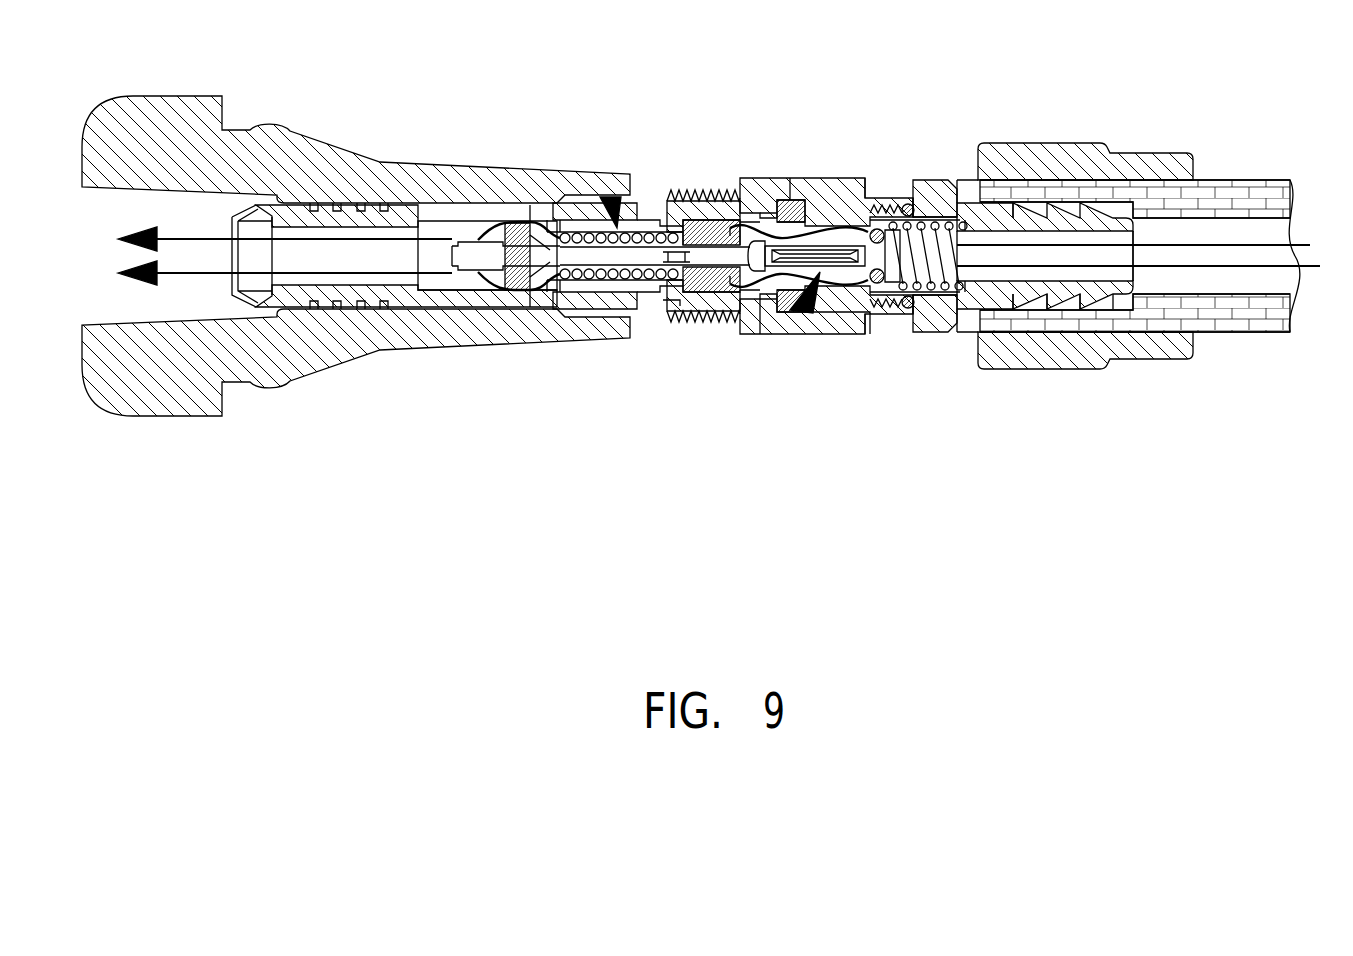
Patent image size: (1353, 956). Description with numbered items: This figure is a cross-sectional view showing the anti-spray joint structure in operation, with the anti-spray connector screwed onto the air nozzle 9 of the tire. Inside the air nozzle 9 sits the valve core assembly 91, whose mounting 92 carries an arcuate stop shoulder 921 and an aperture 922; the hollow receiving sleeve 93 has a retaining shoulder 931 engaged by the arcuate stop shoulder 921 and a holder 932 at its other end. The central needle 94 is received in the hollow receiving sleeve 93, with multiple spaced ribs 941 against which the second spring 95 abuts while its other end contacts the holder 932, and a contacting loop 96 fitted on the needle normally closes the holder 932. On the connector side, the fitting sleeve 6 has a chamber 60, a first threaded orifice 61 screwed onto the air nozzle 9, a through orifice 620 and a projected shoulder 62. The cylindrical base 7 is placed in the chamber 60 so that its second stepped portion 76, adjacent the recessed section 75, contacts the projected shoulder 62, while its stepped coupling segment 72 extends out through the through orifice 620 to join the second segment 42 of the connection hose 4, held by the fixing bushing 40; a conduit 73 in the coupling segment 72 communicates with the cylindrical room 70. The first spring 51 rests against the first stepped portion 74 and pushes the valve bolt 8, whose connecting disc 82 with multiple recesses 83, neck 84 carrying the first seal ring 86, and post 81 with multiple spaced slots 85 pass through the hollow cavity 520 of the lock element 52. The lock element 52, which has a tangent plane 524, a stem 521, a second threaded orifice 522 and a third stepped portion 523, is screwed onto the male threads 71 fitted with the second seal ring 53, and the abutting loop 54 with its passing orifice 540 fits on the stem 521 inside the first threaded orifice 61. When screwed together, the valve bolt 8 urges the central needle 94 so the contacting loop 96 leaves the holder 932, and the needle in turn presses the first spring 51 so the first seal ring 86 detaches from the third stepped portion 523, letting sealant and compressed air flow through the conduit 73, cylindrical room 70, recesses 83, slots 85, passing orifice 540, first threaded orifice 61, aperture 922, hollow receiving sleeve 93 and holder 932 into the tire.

The air nozzle 9 is at (453, 333).
The hollow receiving sleeve 93 is at (640, 316).
The central needle 94 is at (557, 275).
The second spring 95 is at (583, 280).
The contacting loop 96 is at (540, 232).
The valve core assembly 91 is at (612, 195).
The holder 932 is at (535, 205).
The retaining shoulder 931 is at (655, 208).
The multiple spaced ribs 941 is at (670, 306).
The fitting sleeve 6 is at (822, 313).
The mounting 92 is at (690, 200).
The arcuate stop shoulder 921 is at (670, 210).
The aperture 922 is at (735, 200).
The lock element 52 is at (828, 205).
The hollow cavity 520 is at (785, 205).
The stem 521 is at (793, 198).
The abutting loop 54 is at (788, 200).
The third stepped portion 523 is at (866, 200).
The second threaded orifice 522 is at (908, 200).
The tangent plane 524 is at (838, 345).
The passing orifice 540 is at (775, 325).
The chamber 60 is at (810, 290).
The valve bolt 8 is at (783, 283).
The post 81 is at (730, 280).
The first threaded orifice 61 is at (740, 290).
The multiple spaced slots 85 is at (778, 290).
The connecting disc 82 is at (885, 335).
The neck 84 is at (878, 320).
The first seal ring 86 is at (862, 330).
The first stepped portion 74 is at (947, 313).
The male threads 71 is at (882, 205).
The cylindrical room 70 is at (910, 205).
The second seal ring 53 is at (920, 332).
The multiple recesses 83 is at (907, 322).
The cylindrical base 7 is at (952, 202).
The second stepped portion 76 is at (970, 222).
The recessed section 75 is at (970, 240).
The first spring 51 is at (1010, 207).
The projected shoulder 62 is at (973, 330).
The through orifice 620 is at (952, 318).
The connection hose 4 is at (1253, 317).
The second segment 42 is at (1100, 325).
The fixing bushing 40 is at (1170, 360).
The coupling segment 72 is at (1093, 330).
The conduit 73 is at (1105, 318).